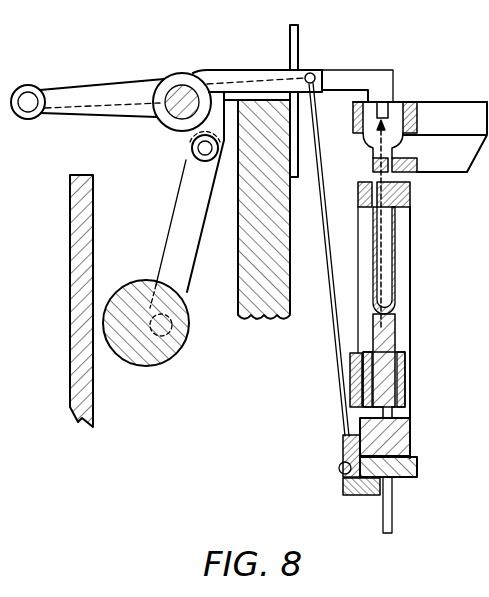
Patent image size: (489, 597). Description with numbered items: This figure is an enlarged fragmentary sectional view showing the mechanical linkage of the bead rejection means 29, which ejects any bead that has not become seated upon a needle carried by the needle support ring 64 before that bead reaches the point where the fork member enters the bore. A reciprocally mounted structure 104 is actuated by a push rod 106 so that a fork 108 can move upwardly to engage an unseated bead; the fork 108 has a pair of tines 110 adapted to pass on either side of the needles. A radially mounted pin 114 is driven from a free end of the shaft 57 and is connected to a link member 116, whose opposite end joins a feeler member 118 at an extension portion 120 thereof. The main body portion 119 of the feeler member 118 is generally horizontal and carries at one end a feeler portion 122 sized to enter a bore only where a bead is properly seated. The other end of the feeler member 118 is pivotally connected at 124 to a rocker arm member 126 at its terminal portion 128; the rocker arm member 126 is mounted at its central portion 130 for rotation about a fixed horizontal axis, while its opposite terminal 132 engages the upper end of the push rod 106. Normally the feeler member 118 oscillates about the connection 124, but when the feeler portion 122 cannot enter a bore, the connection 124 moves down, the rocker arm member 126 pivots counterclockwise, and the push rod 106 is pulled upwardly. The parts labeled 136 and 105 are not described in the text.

The pivotal connection 124 is at (32, 86).
The terminal portion 128 is at (37, 117).
The feeler member 118 is at (130, 82).
The central portion 130 is at (180, 73).
The rocker arm member 126 is at (202, 75).
The extension portion 120 is at (190, 135).
The opposite terminal 132 is at (298, 73).
The main body portion 119 is at (327, 77).
The bead rejection means 29 is at (365, 68).
The feeler portion 122 is at (387, 93).
The needle support ring 64 is at (420, 168).
The tines 110 is at (375, 247).
The fork 108 is at (395, 327).
The cup 136 is at (413, 403).
The reciprocally mounted structure 104 is at (413, 433).
The plate 105 is at (350, 497).
The push rod 106 is at (335, 332).
The link member 116 is at (173, 238).
The shaft 57 is at (140, 362).
The radially mounted pin 114 is at (172, 352).